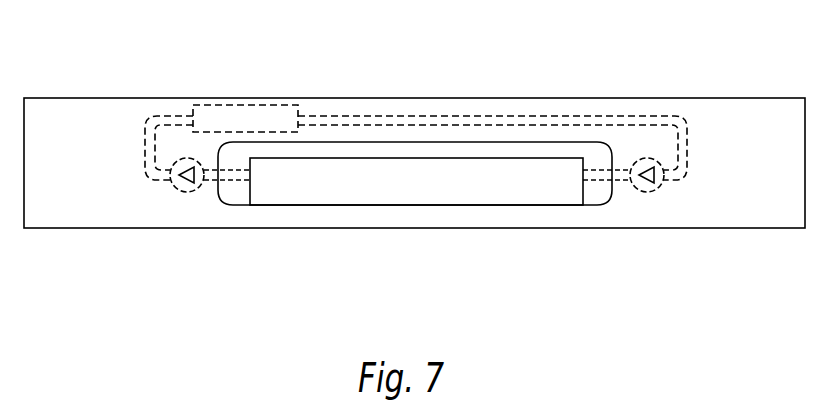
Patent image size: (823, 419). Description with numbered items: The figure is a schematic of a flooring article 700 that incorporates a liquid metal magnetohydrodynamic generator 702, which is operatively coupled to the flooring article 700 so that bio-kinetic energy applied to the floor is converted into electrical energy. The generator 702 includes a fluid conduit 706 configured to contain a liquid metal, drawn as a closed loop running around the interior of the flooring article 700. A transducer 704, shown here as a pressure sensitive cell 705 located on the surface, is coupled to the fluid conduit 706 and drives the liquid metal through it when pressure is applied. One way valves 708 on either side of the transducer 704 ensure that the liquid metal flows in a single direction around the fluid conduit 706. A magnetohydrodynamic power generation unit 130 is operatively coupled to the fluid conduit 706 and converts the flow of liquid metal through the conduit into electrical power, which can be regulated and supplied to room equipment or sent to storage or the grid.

The flooring article 700 is at (170, 68).
The liquid metal magnetohydrodynamic generator 702 is at (692, 149).
The fluid conduit 706 is at (615, 117).
The magnetohydrodynamic power generation unit 130 is at (233, 113).
The one way valves 708 is at (188, 192).
The transducer 704 is at (592, 193).
The pressure sensitive cell 705 is at (436, 182).